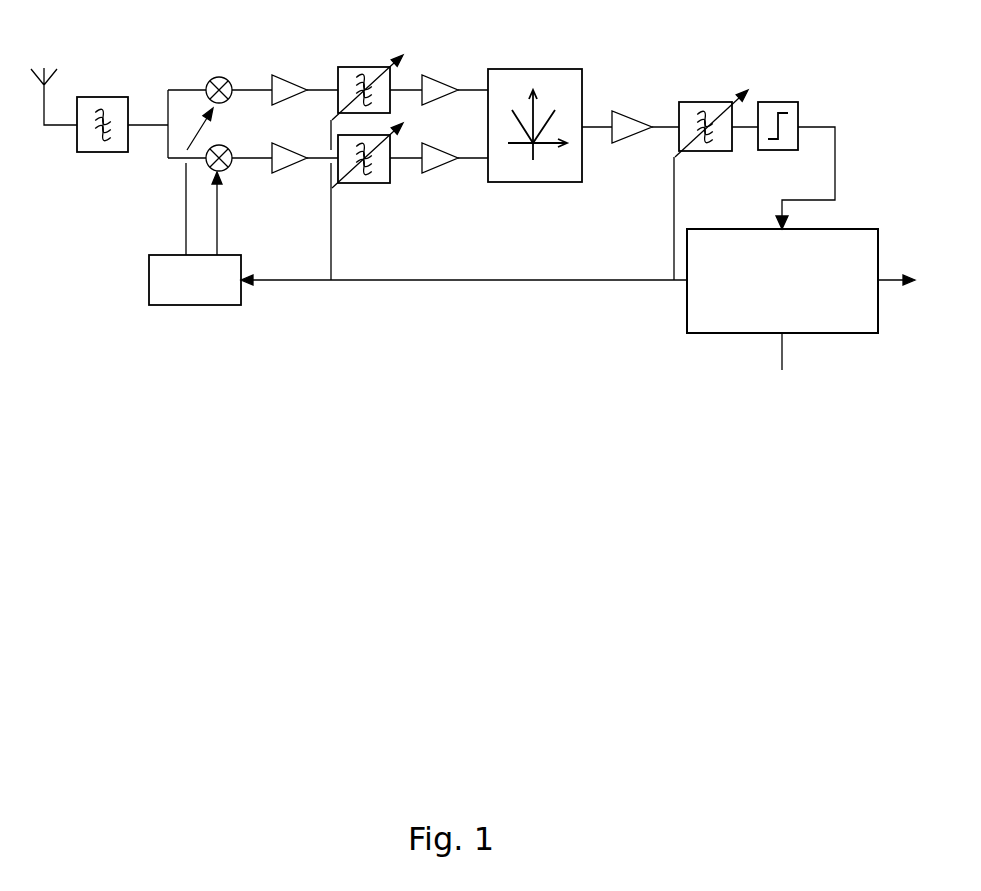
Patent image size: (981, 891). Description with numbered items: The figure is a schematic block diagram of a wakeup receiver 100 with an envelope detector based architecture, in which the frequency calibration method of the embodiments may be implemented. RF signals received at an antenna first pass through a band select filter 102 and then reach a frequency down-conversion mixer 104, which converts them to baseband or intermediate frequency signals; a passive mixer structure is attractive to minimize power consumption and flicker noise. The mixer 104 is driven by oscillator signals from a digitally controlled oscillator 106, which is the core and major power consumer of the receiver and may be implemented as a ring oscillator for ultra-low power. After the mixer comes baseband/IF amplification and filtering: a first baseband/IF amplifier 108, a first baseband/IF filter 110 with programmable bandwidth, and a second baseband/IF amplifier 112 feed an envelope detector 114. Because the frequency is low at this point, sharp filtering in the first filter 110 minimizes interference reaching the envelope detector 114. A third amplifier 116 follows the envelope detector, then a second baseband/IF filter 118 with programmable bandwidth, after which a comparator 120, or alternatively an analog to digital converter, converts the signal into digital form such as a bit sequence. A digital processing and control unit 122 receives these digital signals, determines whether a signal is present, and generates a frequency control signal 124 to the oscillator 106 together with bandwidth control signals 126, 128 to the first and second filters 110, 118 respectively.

The wakeup receiver 100 is at (408, 357).
The band select filter 102 is at (97, 103).
The frequency down-conversion mixer 104 is at (220, 77).
The digitally controlled oscillator 106 is at (175, 297).
The first baseband/IF amplifier 108 is at (285, 87).
The first baseband/IF filter 110 is at (360, 63).
The second baseband/IF amplifier 112 is at (435, 77).
The envelope detector 114 is at (527, 78).
The third amplifier 116 is at (620, 122).
The second baseband/IF filter 118 is at (705, 102).
The comparator 120 is at (773, 110).
The digital processing and control unit 122 is at (713, 324).
The frequency control signal 124 is at (295, 282).
The bandwidth control signal 126 is at (331, 220).
The bandwidth control signal 128 is at (674, 242).